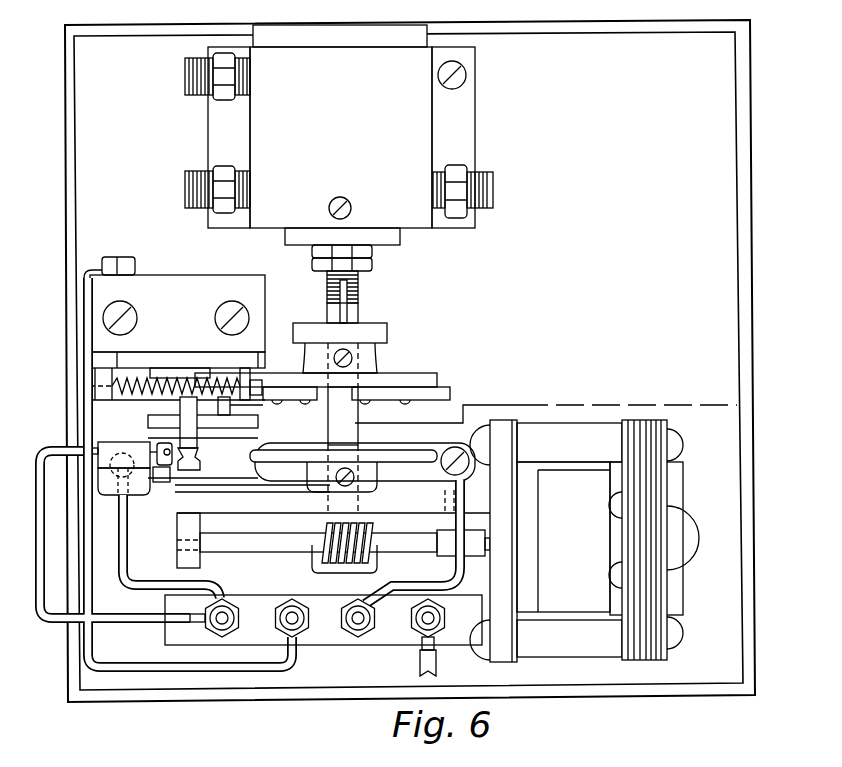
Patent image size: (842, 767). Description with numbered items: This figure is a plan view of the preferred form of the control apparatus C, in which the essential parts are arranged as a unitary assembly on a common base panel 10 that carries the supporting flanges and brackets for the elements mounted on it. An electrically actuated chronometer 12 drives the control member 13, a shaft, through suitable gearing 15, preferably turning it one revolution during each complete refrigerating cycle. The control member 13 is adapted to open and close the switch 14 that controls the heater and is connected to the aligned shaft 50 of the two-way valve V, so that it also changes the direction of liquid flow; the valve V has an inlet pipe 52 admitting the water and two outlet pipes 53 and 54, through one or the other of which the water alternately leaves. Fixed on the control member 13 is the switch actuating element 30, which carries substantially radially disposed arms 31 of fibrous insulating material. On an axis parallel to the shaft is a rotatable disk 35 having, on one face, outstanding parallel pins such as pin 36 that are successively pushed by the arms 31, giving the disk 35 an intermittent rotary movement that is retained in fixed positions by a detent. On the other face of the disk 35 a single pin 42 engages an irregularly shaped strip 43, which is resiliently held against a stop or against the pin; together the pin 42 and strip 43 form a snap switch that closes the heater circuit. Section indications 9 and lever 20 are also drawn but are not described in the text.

The common base panel 10 is at (752, 196).
The control apparatus C is at (60, 160).
The valve V is at (341, 146).
The chronometer 12 is at (665, 655).
The control member 13 is at (338, 25).
The switch 14 is at (181, 77).
The gearing 15 is at (330, 548).
The section line 9 is at (15, 460).
The lever 20 is at (410, 458).
The switch actuating element 30 is at (420, 373).
The arms 31 is at (440, 386).
The rotatable disk 35 is at (258, 426).
The pin 36 is at (232, 408).
The pin 42 is at (163, 474).
The strip 43 is at (185, 462).
The shaft 50 is at (360, 283).
The inlet pipe 52 is at (194, 95).
The outlet pipe 53 is at (201, 213).
The outlet pipe 54 is at (478, 172).